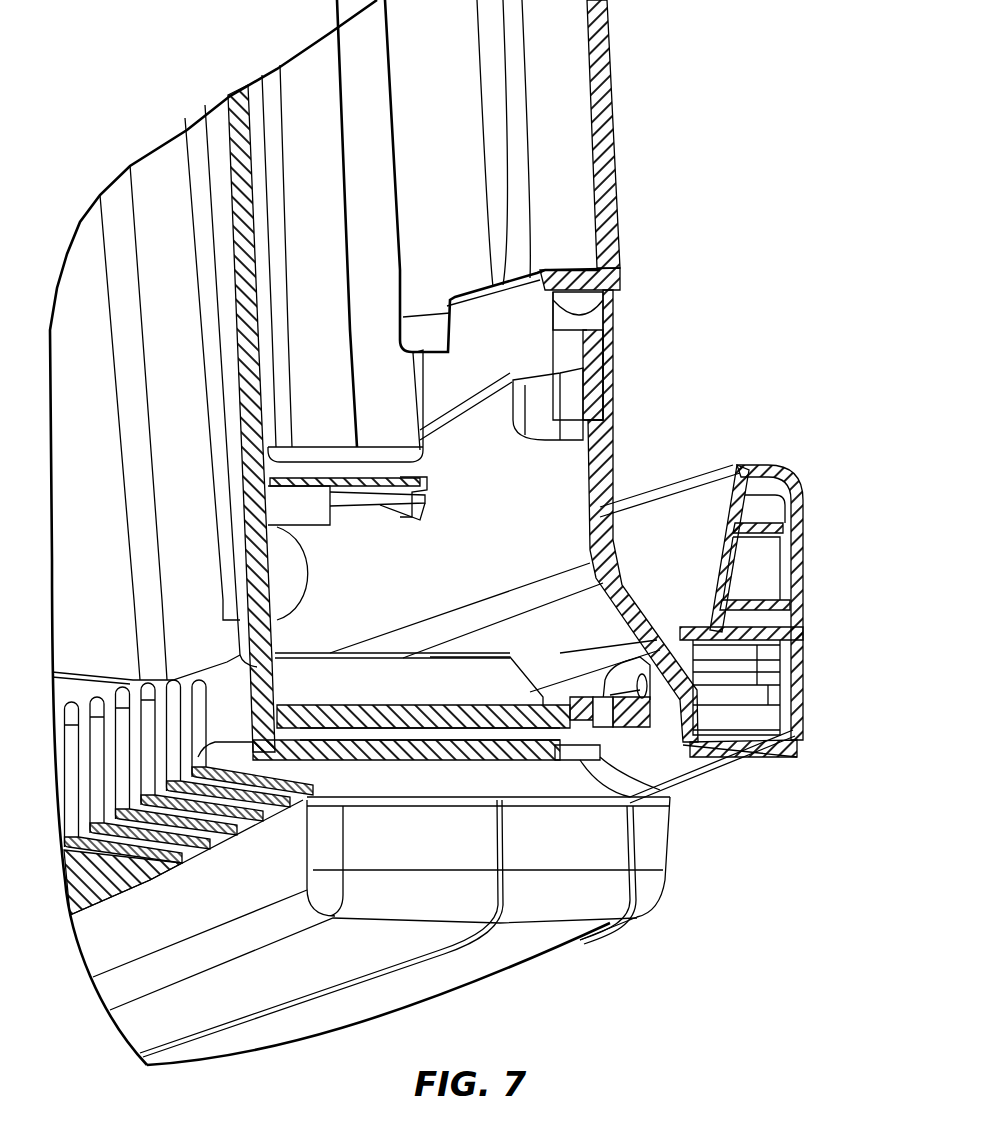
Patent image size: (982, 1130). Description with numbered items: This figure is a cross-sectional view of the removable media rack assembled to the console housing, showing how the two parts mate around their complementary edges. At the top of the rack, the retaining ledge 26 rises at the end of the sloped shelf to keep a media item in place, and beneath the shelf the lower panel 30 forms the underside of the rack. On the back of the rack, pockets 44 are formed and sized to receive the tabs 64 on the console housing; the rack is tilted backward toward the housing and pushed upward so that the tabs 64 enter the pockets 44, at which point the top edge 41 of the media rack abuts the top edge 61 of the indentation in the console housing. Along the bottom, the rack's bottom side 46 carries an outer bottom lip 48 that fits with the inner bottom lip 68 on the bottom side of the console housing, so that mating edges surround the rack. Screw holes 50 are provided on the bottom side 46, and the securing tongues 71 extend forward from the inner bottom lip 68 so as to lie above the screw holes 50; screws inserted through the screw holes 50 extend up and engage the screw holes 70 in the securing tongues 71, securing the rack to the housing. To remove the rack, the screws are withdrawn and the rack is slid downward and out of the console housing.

The retaining ledge 26 is at (758, 563).
The lower panel 30 is at (440, 950).
The top edge 41 is at (607, 313).
The pockets 44 is at (560, 432).
The bottom side 46 is at (637, 760).
The outer bottom lip 48 is at (570, 772).
The screw holes 50 is at (613, 740).
The top edge 61 is at (607, 292).
The tabs 64 is at (580, 393).
The inner bottom lip 68 is at (500, 768).
The screw holes 70 is at (693, 653).
The securing tongues 71 is at (600, 740).